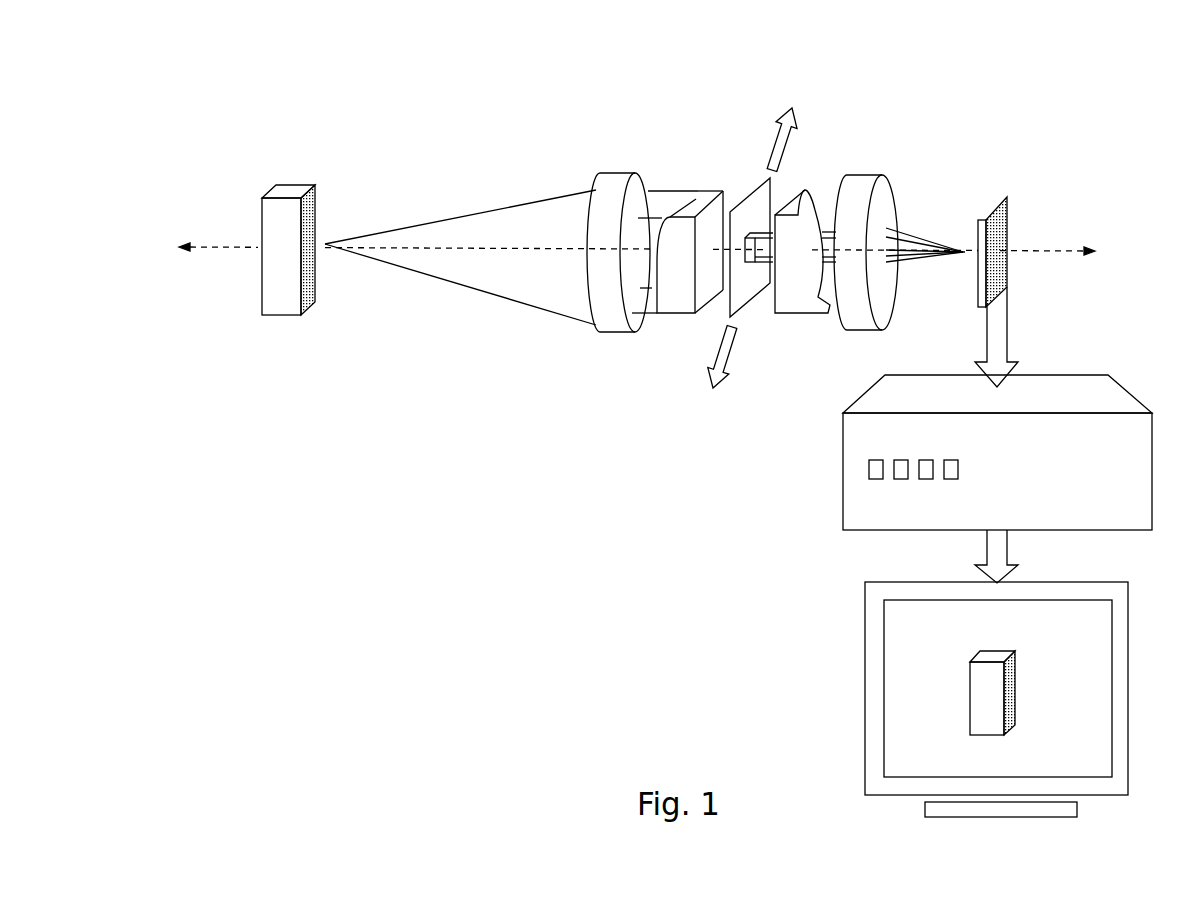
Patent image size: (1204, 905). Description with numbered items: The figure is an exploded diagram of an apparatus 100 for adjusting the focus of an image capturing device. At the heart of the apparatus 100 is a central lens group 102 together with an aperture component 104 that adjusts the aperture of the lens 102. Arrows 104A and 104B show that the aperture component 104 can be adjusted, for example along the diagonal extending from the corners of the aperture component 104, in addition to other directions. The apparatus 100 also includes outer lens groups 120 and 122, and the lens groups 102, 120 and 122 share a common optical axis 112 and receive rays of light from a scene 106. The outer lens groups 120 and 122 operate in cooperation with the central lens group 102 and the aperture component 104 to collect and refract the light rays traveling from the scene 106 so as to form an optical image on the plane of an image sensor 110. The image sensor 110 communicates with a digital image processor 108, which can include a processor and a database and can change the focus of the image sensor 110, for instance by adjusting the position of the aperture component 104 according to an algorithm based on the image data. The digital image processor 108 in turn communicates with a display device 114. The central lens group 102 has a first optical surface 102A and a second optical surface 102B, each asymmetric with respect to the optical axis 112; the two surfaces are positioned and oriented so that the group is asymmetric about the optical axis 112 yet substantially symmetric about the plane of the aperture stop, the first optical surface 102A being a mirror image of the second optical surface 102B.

The apparatus 100 is at (1048, 78).
The central lens group 102 is at (835, 380).
The first optical surface 102A is at (657, 258).
The second optical surface 102B is at (813, 212).
The aperture component 104 is at (765, 200).
The arrow 104A is at (777, 143).
The arrow 104B is at (722, 350).
The scene 106 is at (288, 190).
The digital image processor 108 is at (1098, 484).
The image sensor 110 is at (1005, 195).
The optical axis 112 is at (1047, 250).
The display device 114 is at (1097, 694).
The outer lens group 120 is at (612, 203).
The outer lens group 122 is at (878, 198).